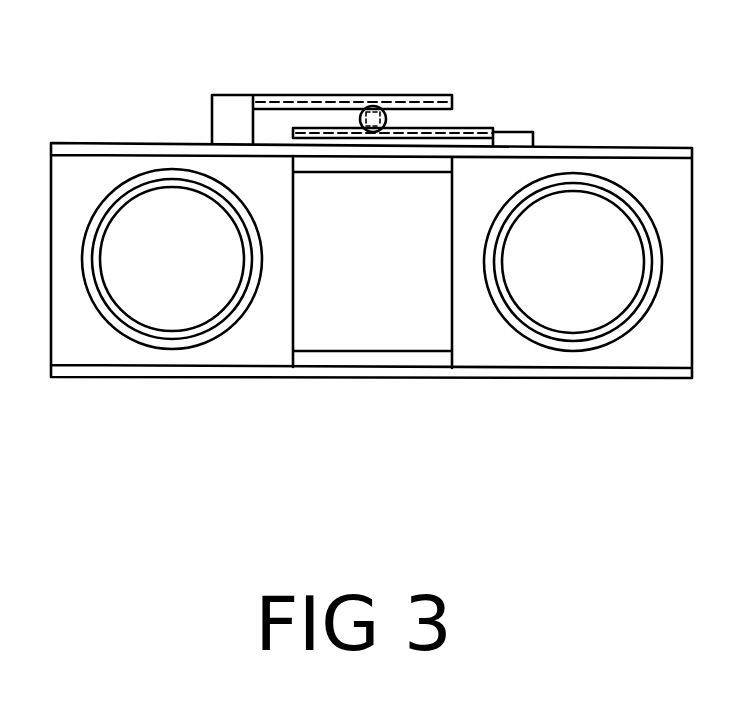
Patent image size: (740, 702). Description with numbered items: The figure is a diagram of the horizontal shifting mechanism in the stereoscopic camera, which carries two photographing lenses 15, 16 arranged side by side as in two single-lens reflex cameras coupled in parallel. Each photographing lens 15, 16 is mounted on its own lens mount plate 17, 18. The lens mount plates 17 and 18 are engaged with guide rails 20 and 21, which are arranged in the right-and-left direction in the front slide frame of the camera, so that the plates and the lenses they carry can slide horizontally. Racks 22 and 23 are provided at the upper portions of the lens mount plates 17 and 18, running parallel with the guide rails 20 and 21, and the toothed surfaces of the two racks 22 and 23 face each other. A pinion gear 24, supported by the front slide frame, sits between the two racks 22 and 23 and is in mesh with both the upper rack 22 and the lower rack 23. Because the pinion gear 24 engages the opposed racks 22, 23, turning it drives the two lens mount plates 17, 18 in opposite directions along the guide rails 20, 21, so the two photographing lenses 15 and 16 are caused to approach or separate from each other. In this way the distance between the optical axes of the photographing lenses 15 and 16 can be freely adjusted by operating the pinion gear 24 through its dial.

The photographing lens 15 is at (178, 312).
The photographing lens 16 is at (582, 310).
The lens mount plate 17 is at (88, 345).
The lens mount plate 18 is at (490, 345).
The guide rail 20 is at (395, 165).
The guide rail 21 is at (332, 358).
The rack 22 is at (290, 93).
The rack 23 is at (467, 129).
The pinion gear 24 is at (387, 119).